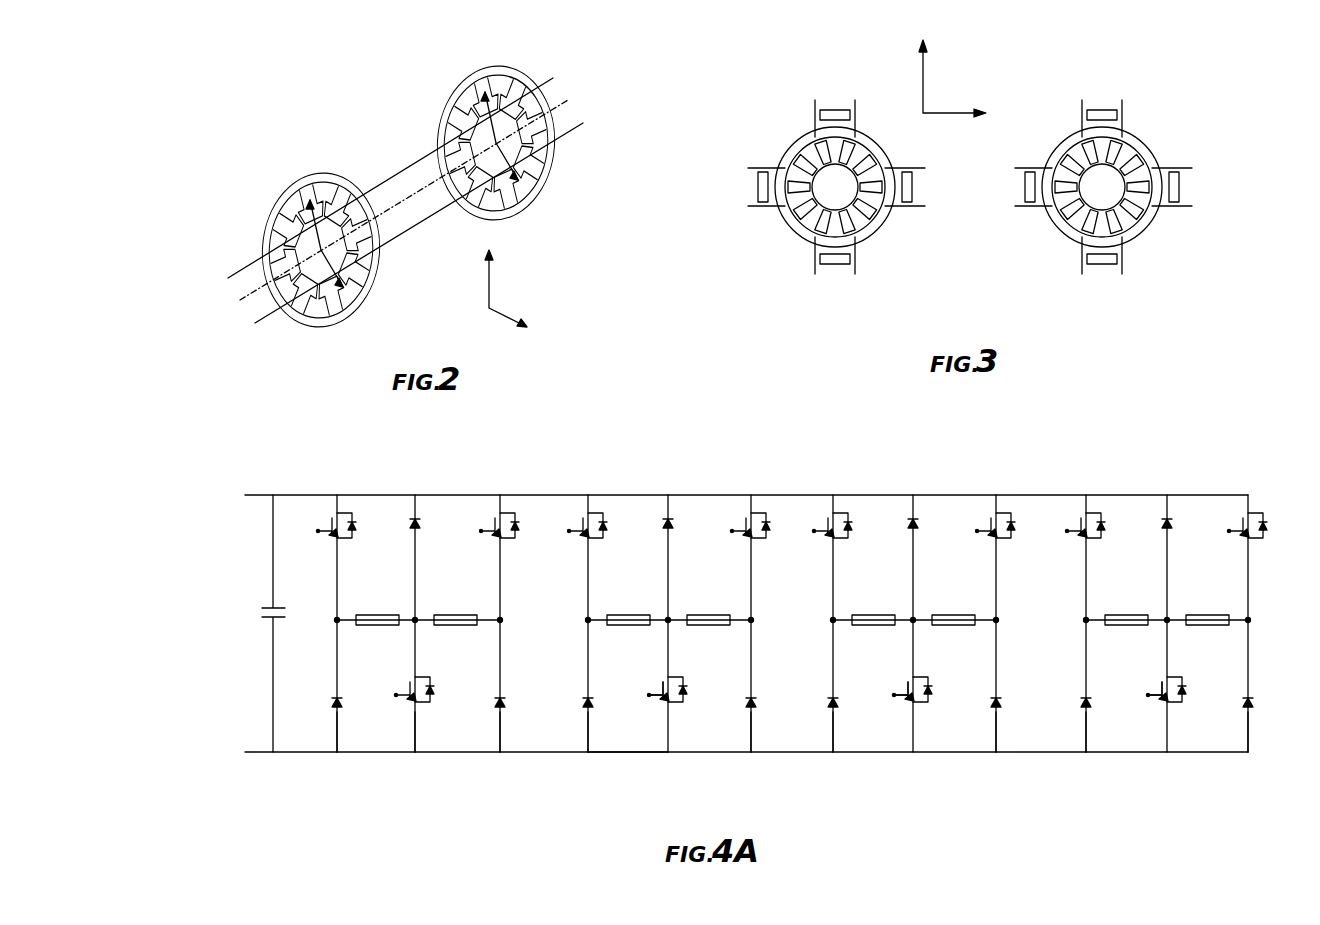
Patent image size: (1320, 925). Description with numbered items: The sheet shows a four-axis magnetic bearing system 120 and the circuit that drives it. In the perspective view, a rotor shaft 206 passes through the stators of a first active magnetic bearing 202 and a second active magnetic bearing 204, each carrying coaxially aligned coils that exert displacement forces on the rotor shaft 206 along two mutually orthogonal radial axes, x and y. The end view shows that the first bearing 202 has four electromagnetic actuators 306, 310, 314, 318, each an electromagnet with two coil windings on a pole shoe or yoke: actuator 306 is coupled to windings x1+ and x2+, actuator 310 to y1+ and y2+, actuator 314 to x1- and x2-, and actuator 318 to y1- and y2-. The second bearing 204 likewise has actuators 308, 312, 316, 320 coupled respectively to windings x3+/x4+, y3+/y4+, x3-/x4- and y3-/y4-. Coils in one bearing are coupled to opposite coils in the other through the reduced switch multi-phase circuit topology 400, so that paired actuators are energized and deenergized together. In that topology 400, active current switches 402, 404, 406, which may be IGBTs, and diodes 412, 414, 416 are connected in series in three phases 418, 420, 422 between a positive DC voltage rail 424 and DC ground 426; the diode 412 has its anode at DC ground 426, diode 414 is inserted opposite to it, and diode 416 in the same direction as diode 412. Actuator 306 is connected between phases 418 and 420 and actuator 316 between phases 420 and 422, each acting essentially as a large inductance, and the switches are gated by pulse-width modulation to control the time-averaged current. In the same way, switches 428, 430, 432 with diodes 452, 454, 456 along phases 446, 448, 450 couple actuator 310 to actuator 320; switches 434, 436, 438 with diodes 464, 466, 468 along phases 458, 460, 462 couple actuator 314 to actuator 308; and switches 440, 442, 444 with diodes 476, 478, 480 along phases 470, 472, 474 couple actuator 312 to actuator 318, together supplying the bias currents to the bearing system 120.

In FIG. 2, the magnetic bearing system 120 is at (423, 201).
In FIG. 3, the magnetic bearing system 120 is at (946, 188).
In FIG. 2, the first active magnetic bearing 202 is at (366, 275).
In FIG. 3, the first active magnetic bearing 202 is at (792, 226).
In FIG. 2, the second active magnetic bearing 204 is at (541, 165).
In FIG. 3, the second active magnetic bearing 204 is at (1060, 226).
In FIG. 2, the rotor shaft 206 is at (408, 173).
In FIG. 3, the actuator 306 is at (758, 185).
In FIG. 4A, the actuator 306 is at (378, 615).
In FIG. 3, the actuator 308 is at (1022, 205).
In FIG. 4A, the actuator 308 is at (958, 615).
In FIG. 3, the actuator 310 is at (833, 113).
In FIG. 4A, the actuator 310 is at (630, 615).
In FIG. 3, the actuator 312 is at (1100, 113).
In FIG. 4A, the actuator 312 is at (1128, 615).
In FIG. 3, the actuator 314 is at (910, 200).
In FIG. 4A, the actuator 314 is at (875, 615).
In FIG. 3, the actuator 316 is at (1178, 200).
In FIG. 4A, the actuator 316 is at (462, 615).
In FIG. 3, the actuator 318 is at (833, 262).
In FIG. 4A, the actuator 318 is at (1210, 615).
In FIG. 3, the actuator 320 is at (1100, 262).
In FIG. 4A, the actuator 320 is at (715, 615).
In FIG. 4A, the reduced switch multi-phase circuit topology 400 is at (700, 589).
In FIG. 4A, the active current switch 402 is at (338, 513).
In FIG. 4A, the active current switch 404 is at (428, 705).
In FIG. 4A, the active current switch 406 is at (505, 513).
In FIG. 4A, the diode 412 is at (333, 706).
In FIG. 4A, the diode 414 is at (418, 518).
In FIG. 4A, the diode 416 is at (504, 702).
In FIG. 4A, the first phase 418 is at (336, 740).
In FIG. 4A, the second phase 420 is at (413, 742).
In FIG. 4A, the third phase 422 is at (504, 754).
In FIG. 4A, the positive DC voltage rail 424 is at (262, 495).
In FIG. 4A, the DC ground 426 is at (618, 755).
In FIG. 4A, the active current switch 428 is at (592, 513).
In FIG. 4A, the active current switch 430 is at (681, 705).
In FIG. 4A, the active current switch 432 is at (757, 513).
In FIG. 4A, the active current switch 434 is at (838, 513).
In FIG. 4A, the active current switch 436 is at (928, 705).
In FIG. 4A, the active current switch 438 is at (1000, 513).
In FIG. 4A, the active current switch 440 is at (1090, 513).
In FIG. 4A, the active current switch 442 is at (1178, 705).
In FIG. 4A, the active current switch 444 is at (1252, 513).
In FIG. 4A, the phase 446 is at (587, 742).
In FIG. 4A, the phase 448 is at (660, 690).
In FIG. 4A, the phase 450 is at (752, 736).
In FIG. 4A, the diode 452 is at (586, 706).
In FIG. 4A, the diode 454 is at (672, 518).
In FIG. 4A, the diode 456 is at (755, 703).
In FIG. 4A, the phase 458 is at (832, 740).
In FIG. 4A, the phase 460 is at (906, 690).
In FIG. 4A, the phase 462 is at (998, 736).
In FIG. 4A, the diode 464 is at (831, 704).
In FIG. 4A, the diode 466 is at (916, 518).
In FIG. 4A, the diode 468 is at (1000, 703).
In FIG. 4A, the phase 470 is at (1085, 740).
In FIG. 4A, the gate of transistor T12 472 is at (1160, 690).
In FIG. 4A, the phase 474 is at (1249, 740).
In FIG. 4A, the diode 476 is at (1084, 704).
In FIG. 4A, the diode 478 is at (1170, 518).
In FIG. 4A, the diode 480 is at (1250, 703).